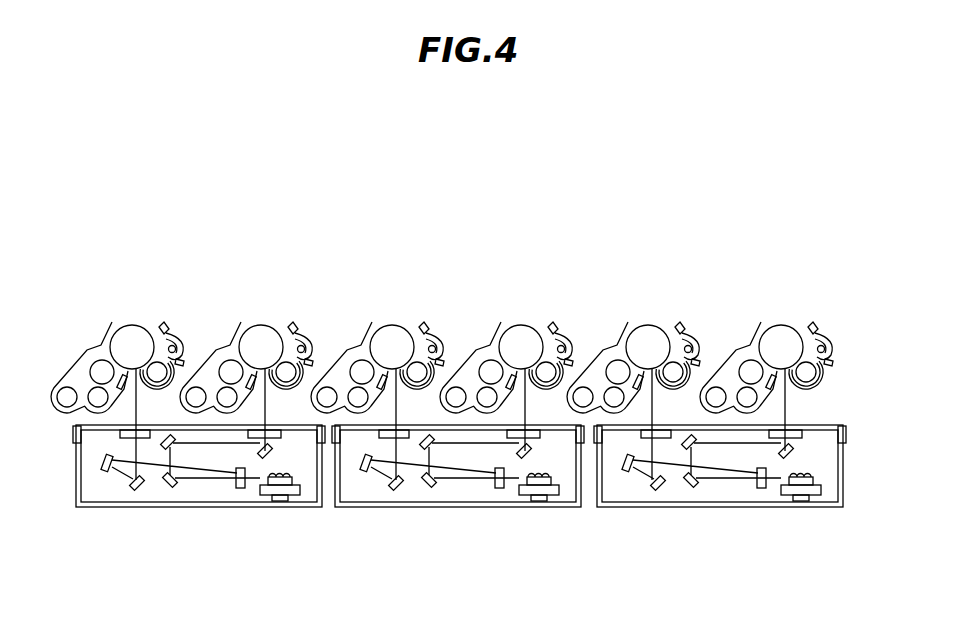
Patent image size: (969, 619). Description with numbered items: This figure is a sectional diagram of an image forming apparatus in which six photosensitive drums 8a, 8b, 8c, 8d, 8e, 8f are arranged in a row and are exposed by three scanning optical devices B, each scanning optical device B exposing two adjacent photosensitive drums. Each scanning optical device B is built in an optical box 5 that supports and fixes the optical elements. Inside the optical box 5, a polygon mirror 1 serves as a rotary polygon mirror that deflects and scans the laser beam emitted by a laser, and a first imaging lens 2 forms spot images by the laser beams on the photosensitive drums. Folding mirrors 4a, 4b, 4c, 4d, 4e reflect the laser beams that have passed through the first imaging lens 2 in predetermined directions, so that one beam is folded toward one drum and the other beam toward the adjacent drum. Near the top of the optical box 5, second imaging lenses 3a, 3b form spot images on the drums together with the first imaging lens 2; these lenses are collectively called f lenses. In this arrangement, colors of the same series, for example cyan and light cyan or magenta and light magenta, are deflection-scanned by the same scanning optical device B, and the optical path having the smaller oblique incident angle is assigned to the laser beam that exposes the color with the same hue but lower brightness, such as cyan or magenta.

The polygon mirror 1 is at (303, 507).
The first imaging lens 2 is at (240, 490).
The second imaging lens 3a is at (121, 434).
The second imaging lens 3b is at (281, 431).
The folding mirror 4a is at (104, 472).
The folding mirror 4b is at (137, 492).
The folding mirror 4c is at (703, 535).
The folding mirror 4d is at (167, 434).
The folding mirror 4e is at (270, 454).
The optical box 5 is at (76, 478).
The photosensitive drum 8a is at (117, 371).
The photosensitive drum 8b is at (246, 357).
The photosensitive drum 8c is at (377, 371).
The photosensitive drum 8d is at (506, 357).
The photosensitive drum 8e is at (633, 371).
The photosensitive drum 8f is at (766, 357).
The scanning optical device B is at (254, 513).